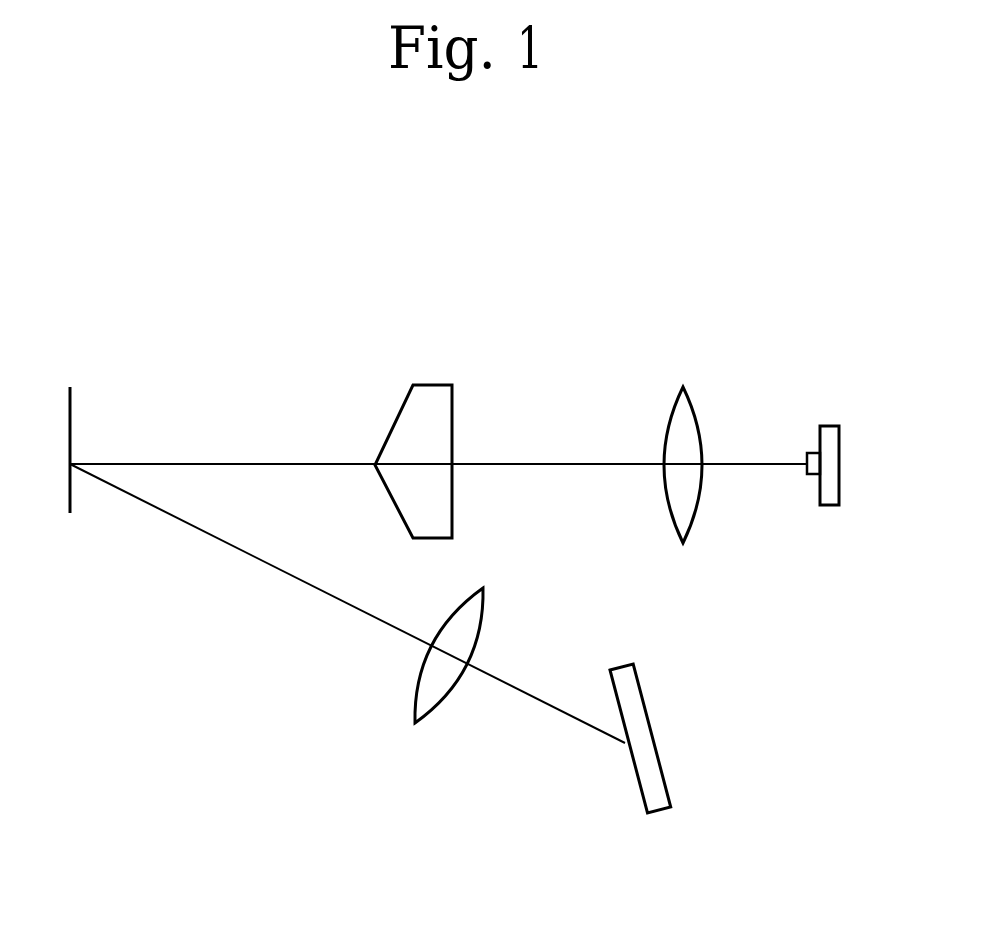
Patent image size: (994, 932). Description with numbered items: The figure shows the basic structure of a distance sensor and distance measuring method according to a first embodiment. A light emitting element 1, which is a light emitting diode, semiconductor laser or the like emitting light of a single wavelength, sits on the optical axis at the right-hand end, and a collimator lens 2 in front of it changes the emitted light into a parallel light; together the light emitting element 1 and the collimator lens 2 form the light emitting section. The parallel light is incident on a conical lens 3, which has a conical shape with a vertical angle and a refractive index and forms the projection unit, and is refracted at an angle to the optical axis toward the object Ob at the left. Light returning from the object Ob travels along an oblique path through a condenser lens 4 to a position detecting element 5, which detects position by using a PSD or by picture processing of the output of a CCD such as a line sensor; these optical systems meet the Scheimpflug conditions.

The object Ob is at (72, 412).
The light emitting element 1 is at (830, 425).
The collimator lens 2 is at (700, 418).
The conical lens 3 is at (437, 385).
The condenser lens 4 is at (437, 705).
The position detecting element 5 is at (656, 813).